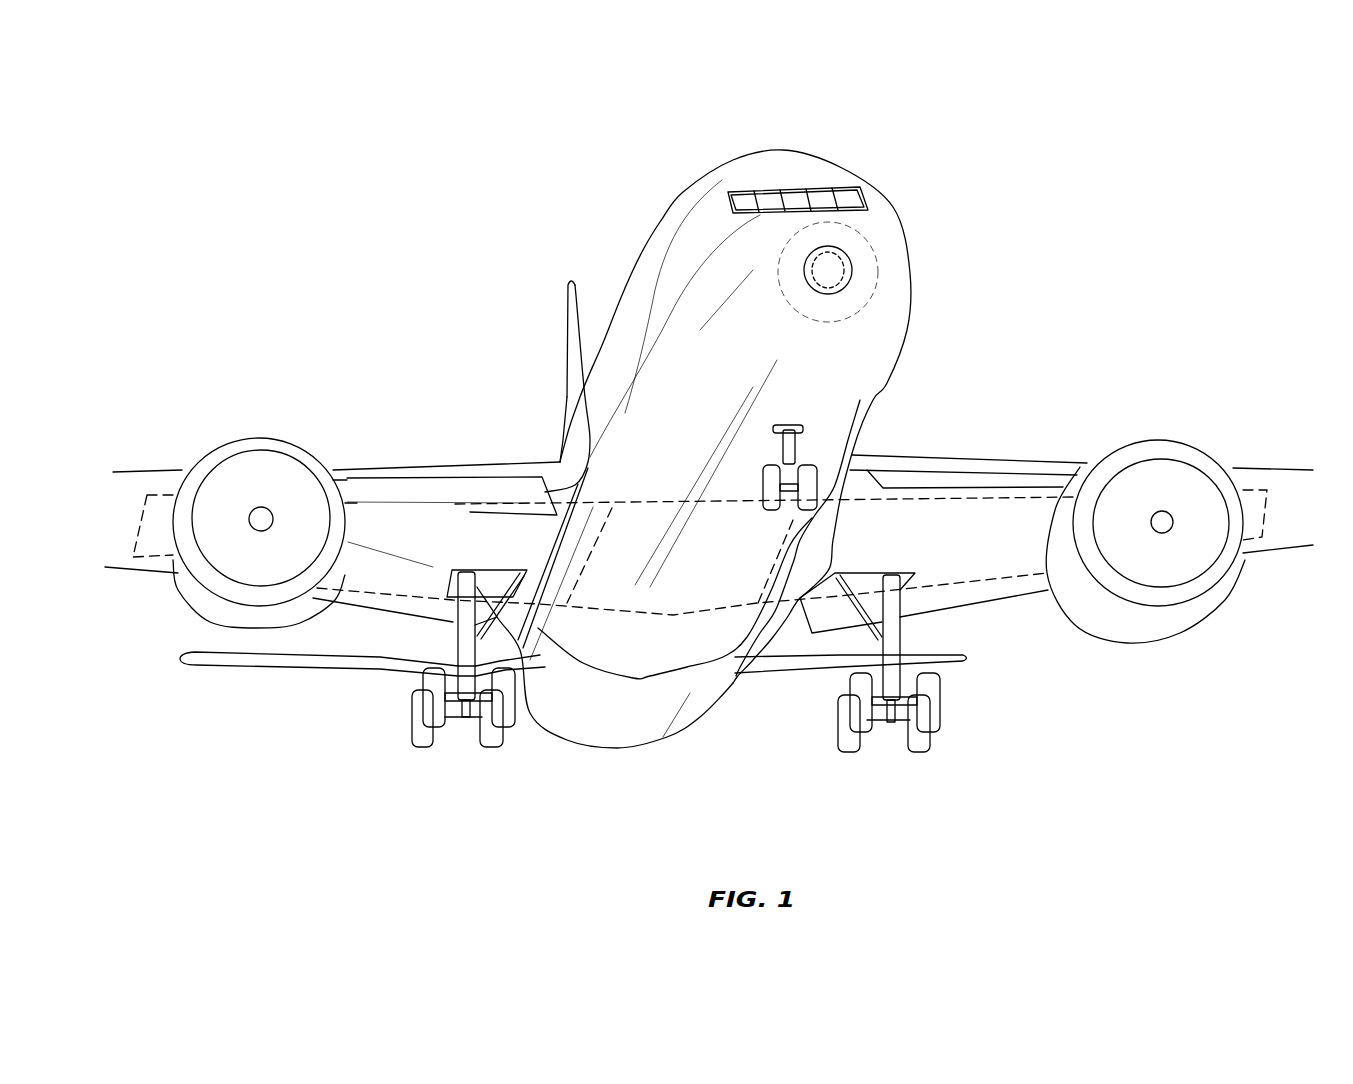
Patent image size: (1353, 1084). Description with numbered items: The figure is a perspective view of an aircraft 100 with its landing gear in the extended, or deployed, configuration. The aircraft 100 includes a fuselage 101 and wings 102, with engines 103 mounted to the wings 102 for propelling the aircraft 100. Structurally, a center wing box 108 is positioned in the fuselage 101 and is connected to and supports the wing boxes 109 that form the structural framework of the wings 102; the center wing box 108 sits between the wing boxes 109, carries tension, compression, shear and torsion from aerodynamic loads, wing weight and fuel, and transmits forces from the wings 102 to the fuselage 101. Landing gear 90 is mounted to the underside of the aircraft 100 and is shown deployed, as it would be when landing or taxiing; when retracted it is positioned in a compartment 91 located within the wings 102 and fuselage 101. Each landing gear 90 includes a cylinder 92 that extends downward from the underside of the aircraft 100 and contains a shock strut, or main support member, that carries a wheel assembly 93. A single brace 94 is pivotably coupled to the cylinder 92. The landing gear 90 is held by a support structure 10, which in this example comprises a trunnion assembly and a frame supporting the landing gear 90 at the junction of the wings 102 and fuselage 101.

The aircraft 100 is at (618, 182).
The fuselage 101 is at (890, 205).
The center wing box 108 is at (640, 527).
The wings 102 is at (385, 462).
The wing boxes 109 is at (358, 530).
The engines 103 is at (225, 592).
The landing gear 90 is at (388, 737).
The support structure 10 is at (495, 555).
The compartment 91 is at (480, 565).
The cylinder 92 is at (467, 633).
The wheel assembly 93 is at (435, 712).
The brace 94 is at (507, 633).